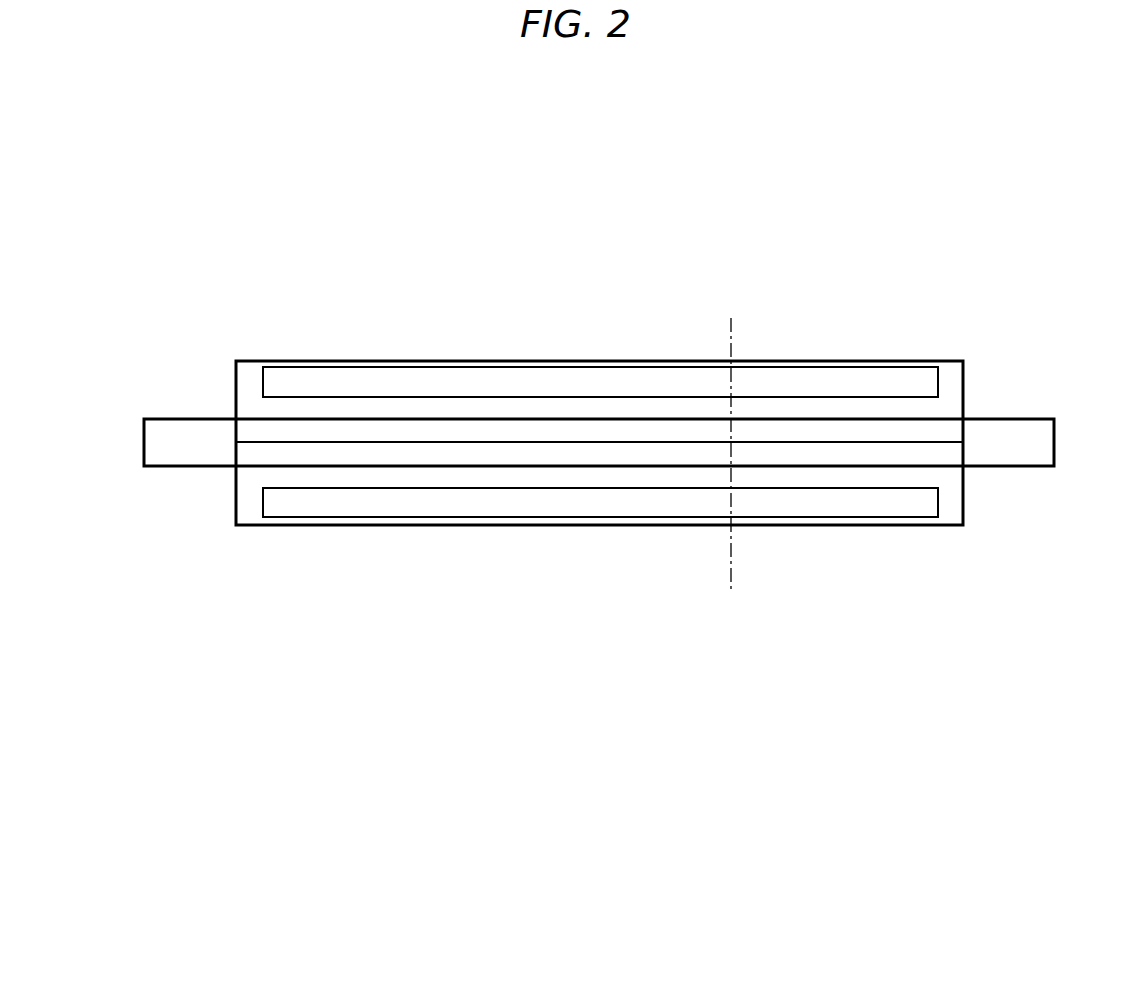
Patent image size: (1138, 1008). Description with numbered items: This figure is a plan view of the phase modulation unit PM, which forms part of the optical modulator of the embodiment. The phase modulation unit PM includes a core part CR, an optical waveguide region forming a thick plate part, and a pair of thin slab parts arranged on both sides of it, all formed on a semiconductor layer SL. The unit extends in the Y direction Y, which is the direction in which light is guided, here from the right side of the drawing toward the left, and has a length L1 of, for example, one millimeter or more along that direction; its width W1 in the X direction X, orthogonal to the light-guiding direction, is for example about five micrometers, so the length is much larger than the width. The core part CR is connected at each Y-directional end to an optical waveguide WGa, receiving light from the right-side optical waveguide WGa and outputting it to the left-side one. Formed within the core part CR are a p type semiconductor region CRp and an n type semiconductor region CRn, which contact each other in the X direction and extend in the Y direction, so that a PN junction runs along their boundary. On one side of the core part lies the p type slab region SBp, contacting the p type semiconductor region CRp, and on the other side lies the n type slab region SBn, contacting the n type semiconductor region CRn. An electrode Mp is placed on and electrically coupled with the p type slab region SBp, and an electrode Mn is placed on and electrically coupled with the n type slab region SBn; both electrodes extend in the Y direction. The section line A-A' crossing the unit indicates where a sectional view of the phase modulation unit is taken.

The semiconductor layer SL is at (943, 360).
The phase modulation unit PM is at (963, 153).
The optical waveguide WGa is at (235, 153).
The p type semiconductor region SBp is at (522, 403).
The n type semiconductor region SBn is at (549, 485).
The electrode Mp is at (430, 375).
The electrode Mn is at (452, 508).
The core part CR is at (902, 293).
The n type semiconductor region CRn is at (799, 452).
The p type semiconductor region CRp is at (871, 433).
The width W1 is at (1069, 360).
The length L1 is at (963, 635).
The line A-A' A is at (735, 453).
The X direction X is at (93, 813).
The Y direction Y is at (45, 765).